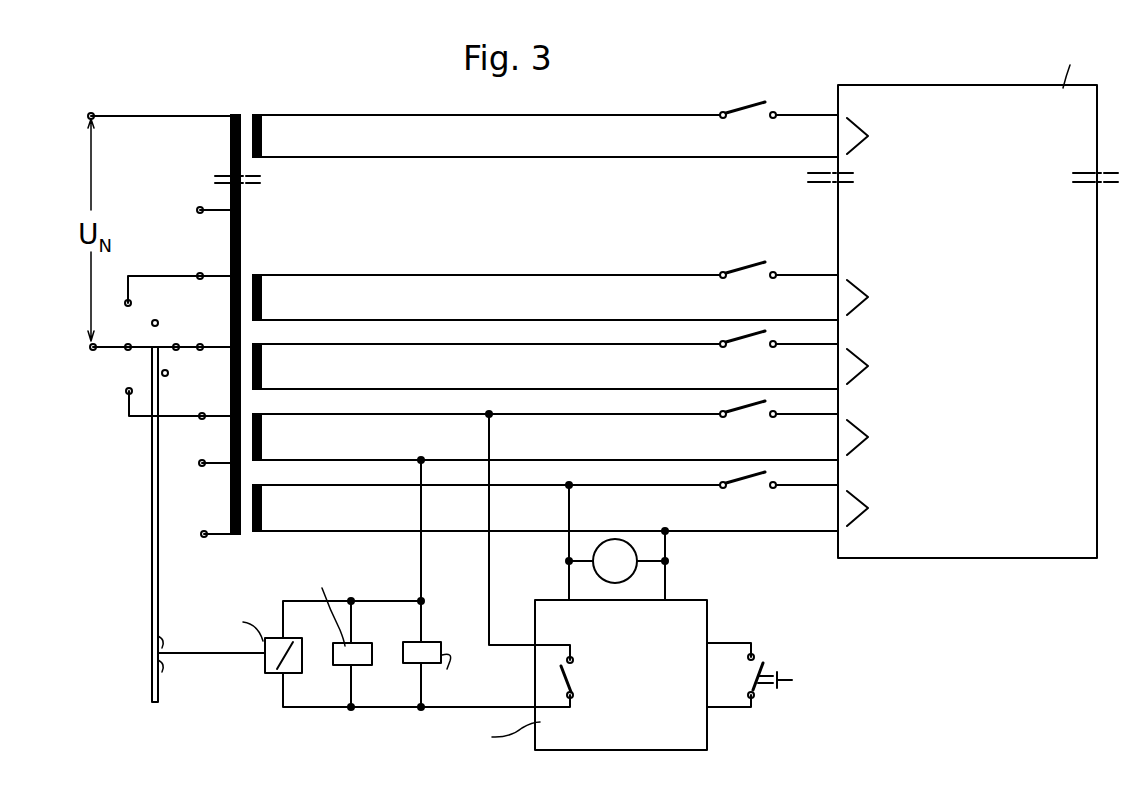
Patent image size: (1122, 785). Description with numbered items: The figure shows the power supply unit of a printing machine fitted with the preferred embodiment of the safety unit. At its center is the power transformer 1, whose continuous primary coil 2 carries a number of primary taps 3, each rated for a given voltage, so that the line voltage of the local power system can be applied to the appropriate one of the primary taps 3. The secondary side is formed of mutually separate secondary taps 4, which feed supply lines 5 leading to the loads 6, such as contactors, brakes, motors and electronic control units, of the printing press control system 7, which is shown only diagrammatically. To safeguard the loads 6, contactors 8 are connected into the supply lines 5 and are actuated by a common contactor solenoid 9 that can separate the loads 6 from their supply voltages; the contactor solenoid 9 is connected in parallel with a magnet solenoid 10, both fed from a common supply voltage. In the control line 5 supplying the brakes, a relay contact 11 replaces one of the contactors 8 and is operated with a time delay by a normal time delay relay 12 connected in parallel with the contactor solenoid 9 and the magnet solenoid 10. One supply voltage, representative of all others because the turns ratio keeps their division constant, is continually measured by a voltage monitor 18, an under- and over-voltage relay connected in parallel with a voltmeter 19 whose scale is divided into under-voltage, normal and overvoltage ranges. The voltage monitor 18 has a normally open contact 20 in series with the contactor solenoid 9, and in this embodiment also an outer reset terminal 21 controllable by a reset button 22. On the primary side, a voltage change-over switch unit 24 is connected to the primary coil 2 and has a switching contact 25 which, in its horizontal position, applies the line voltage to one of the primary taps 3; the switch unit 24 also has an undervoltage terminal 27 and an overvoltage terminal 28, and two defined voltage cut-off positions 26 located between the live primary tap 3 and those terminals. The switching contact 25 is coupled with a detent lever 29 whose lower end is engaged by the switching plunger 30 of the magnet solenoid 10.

The power transformer 1 is at (246, 92).
The primary coil 2 is at (236, 540).
The primary taps 3 is at (201, 534).
The secondary taps 4 is at (258, 140).
The supply lines 5 is at (363, 157).
The loads 6 is at (888, 97).
The printing press control system 7 is at (1002, 98).
The contactors 8 is at (745, 112).
The contactor solenoid 9 is at (415, 658).
The magnet solenoid 10 is at (288, 664).
The relay contact 11 is at (731, 341).
The normal time delay relay 12 is at (345, 658).
The voltage monitor 18 is at (697, 730).
The voltmeter 19 is at (632, 568).
The normally open contact 20 is at (577, 683).
The outer reset terminal 21 is at (757, 689).
The reset button 22 is at (792, 681).
The voltage change-over switch unit 24 is at (119, 385).
The switching contact 25 is at (137, 352).
The voltage cut-off positions 26 is at (165, 371).
The undervoltage terminal 27 is at (126, 303).
The overvoltage terminal 28 is at (128, 393).
The detent lever 29 is at (152, 582).
The switching plunger 30 is at (193, 656).